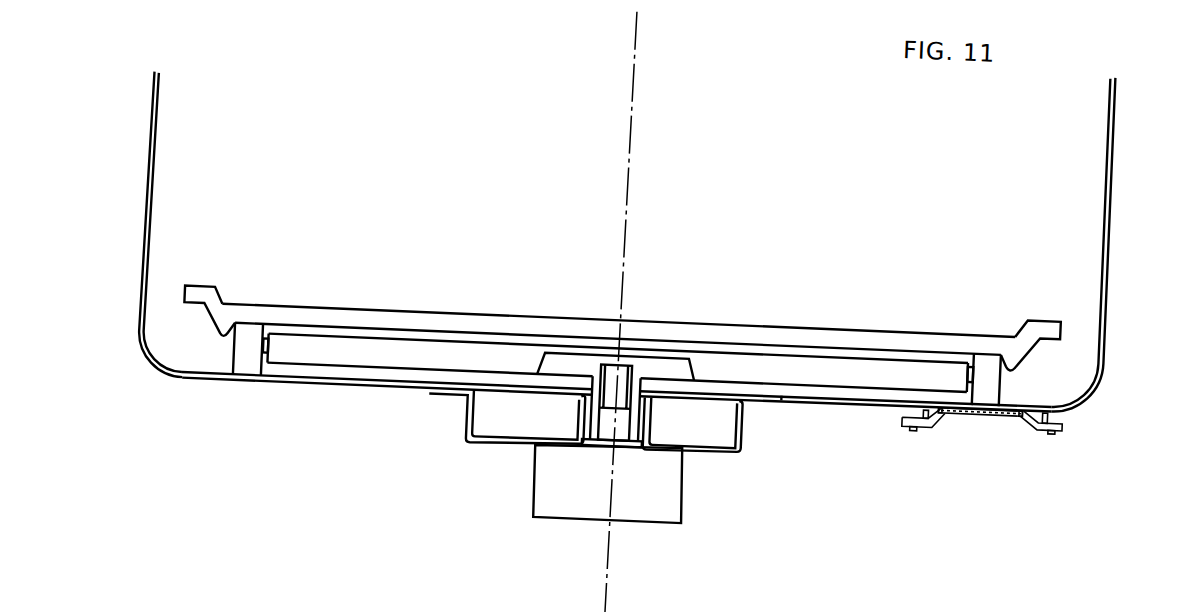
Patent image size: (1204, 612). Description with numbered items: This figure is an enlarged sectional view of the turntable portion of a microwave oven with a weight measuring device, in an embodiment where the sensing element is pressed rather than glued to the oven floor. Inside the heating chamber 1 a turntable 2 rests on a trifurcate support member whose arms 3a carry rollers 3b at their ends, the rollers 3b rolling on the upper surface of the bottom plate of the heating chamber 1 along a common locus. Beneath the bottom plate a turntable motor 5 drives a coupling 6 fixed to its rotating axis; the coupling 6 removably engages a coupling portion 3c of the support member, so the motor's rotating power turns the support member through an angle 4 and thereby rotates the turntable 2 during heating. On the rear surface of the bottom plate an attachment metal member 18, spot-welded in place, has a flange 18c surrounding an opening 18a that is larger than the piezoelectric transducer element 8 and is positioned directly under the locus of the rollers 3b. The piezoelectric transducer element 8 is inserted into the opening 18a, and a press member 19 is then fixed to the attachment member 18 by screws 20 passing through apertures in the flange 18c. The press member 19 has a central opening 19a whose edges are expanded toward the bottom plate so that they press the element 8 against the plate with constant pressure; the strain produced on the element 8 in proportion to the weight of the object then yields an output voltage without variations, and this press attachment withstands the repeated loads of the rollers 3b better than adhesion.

The heating chamber 1 is at (140, 226).
The turntable 2 is at (413, 321).
The arms 3a is at (864, 364).
The rollers 3b is at (989, 347).
The coupling portion 3c is at (694, 358).
The angle 4 is at (741, 452).
The turntable motor 5 is at (649, 512).
The coupling 6 is at (656, 365).
The piezoelectric transducer element 8 is at (970, 403).
The attachment metal member 18 is at (1064, 390).
The opening 18a is at (1023, 390).
The flange 18c is at (902, 408).
The press member 19 is at (1022, 415).
The opening 19a is at (994, 400).
The screws 20 is at (917, 418).